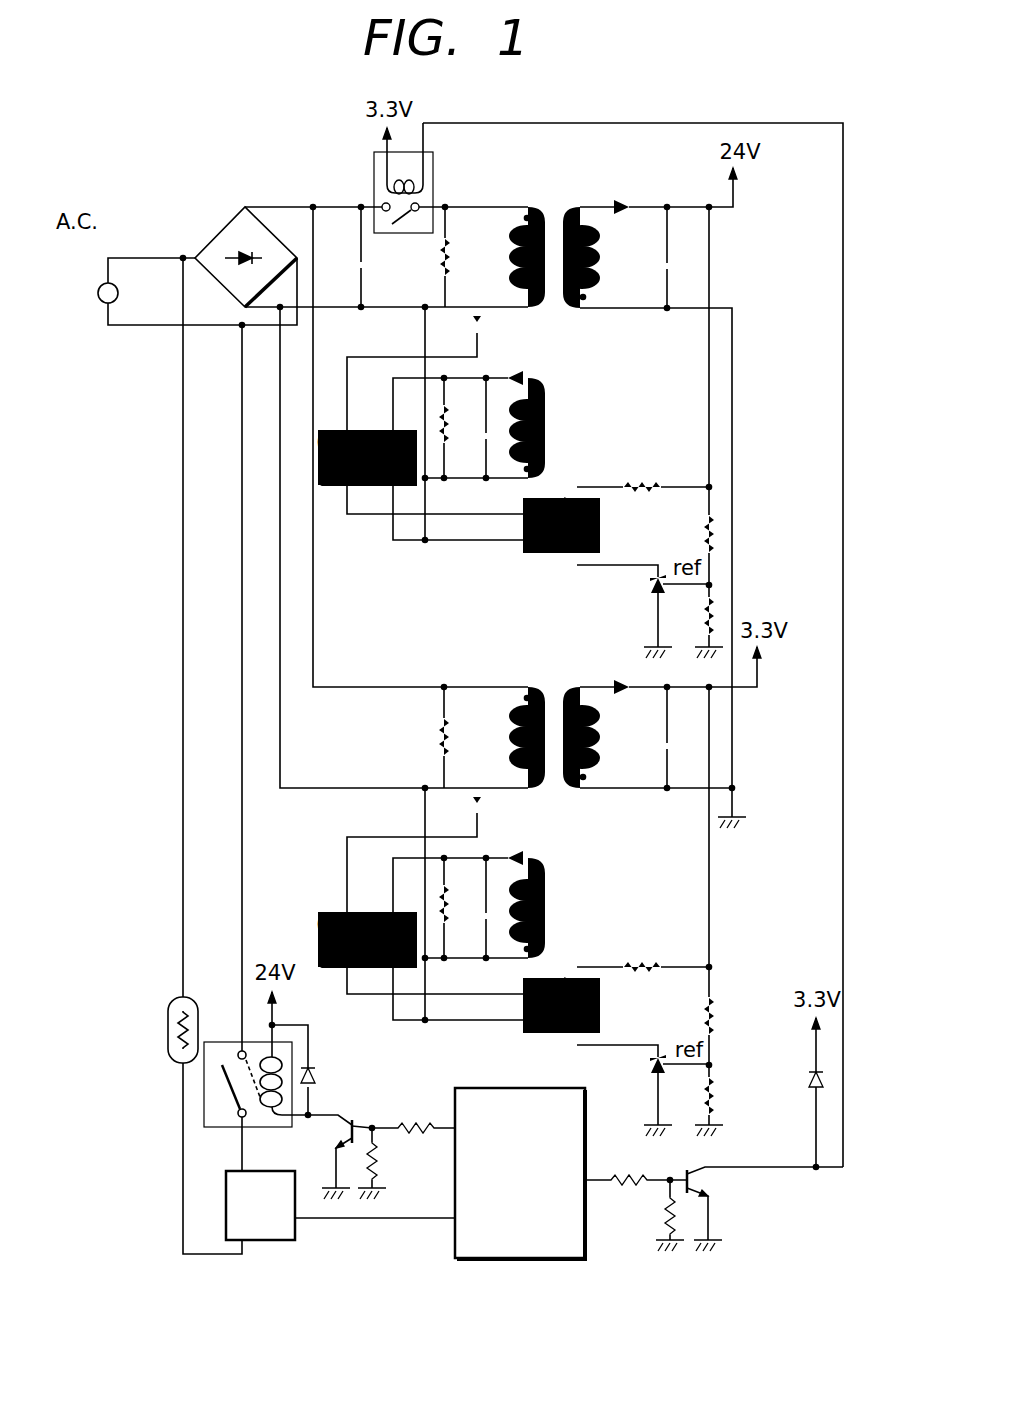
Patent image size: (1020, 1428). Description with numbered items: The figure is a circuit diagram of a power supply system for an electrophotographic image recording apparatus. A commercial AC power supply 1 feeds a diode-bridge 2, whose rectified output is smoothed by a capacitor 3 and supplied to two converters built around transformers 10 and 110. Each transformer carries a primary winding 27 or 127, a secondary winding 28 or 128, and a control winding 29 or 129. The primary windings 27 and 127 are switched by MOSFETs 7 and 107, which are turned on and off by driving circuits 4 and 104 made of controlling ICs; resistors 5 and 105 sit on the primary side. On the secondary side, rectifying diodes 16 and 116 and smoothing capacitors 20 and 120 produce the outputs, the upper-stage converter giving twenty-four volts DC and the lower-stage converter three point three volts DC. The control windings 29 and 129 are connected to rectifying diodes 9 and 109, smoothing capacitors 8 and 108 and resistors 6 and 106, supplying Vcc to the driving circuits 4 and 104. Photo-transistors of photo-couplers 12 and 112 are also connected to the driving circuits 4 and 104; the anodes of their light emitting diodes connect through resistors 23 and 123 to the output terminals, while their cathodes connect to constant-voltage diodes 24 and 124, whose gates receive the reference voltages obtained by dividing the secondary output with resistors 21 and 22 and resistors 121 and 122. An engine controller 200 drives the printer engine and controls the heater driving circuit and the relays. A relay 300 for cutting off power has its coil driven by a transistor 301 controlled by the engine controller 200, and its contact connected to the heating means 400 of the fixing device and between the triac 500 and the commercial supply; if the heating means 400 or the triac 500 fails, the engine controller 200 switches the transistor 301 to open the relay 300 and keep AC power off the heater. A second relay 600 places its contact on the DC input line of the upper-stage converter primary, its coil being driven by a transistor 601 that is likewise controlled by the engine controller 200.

The commercial AC power supply 1 is at (98, 286).
The diode-bridge 2 is at (224, 234).
The capacitor 3 is at (353, 263).
The driving circuit 4 is at (335, 430).
The resistor 5 is at (452, 256).
The resistor 6 is at (452, 423).
The MOSFET 7 is at (492, 333).
The smoothing capacitor 8 is at (476, 444).
The rectifying diode 9 is at (522, 374).
The transformer 10 is at (555, 200).
The photo-coupler 12 is at (540, 554).
The rectifying diode 16 is at (625, 200).
The smoothing capacitor 20 is at (659, 264).
The resistor 21 is at (700, 531).
The resistor 22 is at (722, 616).
The resistor 23 is at (643, 481).
The constant-voltage diode 24 is at (650, 588).
The primary winding 27 is at (512, 263).
The secondary winding 28 is at (597, 276).
The control winding 29 is at (514, 464).
The driving circuit 104 is at (335, 912).
The resistor 105 is at (455, 736).
The resistor 106 is at (452, 903).
The MOSFET 107 is at (488, 811).
The smoothing capacitor 108 is at (476, 924).
The rectifying diode 109 is at (522, 854).
The transformer 110 is at (555, 682).
The photo-coupler 112 is at (540, 1034).
The rectifying diode 116 is at (620, 680).
The smoothing capacitor 120 is at (659, 744).
The resistor 121 is at (700, 1011).
The resistor 122 is at (722, 1096).
The resistor 123 is at (643, 961).
The constant-voltage diode 124 is at (650, 1068).
The primary winding 127 is at (512, 743).
The secondary winding 128 is at (597, 756).
The control winding 129 is at (514, 944).
The engine controller 200 is at (583, 1258).
The relay 300 is at (263, 1127).
The transistor 301 is at (340, 1117).
The heating means 400 is at (193, 997).
The triac 500 is at (282, 1240).
The relay 600 is at (374, 165).
The transistor 601 is at (700, 1164).